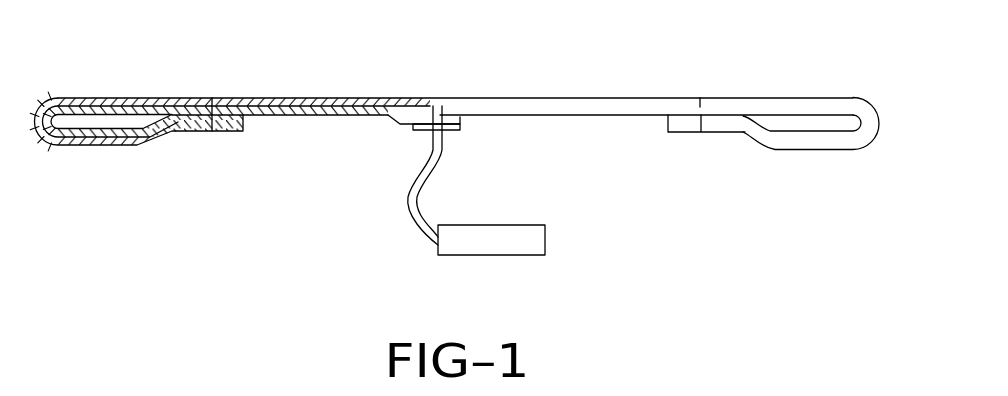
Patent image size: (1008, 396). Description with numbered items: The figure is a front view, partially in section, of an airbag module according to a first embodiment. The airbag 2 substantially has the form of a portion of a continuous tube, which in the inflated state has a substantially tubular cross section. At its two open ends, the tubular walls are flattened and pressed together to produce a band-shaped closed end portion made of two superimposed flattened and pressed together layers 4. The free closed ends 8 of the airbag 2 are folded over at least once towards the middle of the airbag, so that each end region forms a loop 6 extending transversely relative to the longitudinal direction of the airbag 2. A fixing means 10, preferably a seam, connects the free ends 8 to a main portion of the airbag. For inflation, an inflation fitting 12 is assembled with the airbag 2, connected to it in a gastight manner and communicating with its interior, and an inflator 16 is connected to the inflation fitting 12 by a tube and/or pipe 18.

The airbag 2 is at (543, 105).
The flattened and pressed together layers 4 is at (122, 133).
The loop 6 is at (797, 123).
The free closed ends 8 is at (668, 122).
The fixing means 10 is at (702, 107).
The inflation fitting 12 is at (468, 117).
The inflator 16 is at (507, 243).
The tube and/or pipe 18 is at (413, 213).